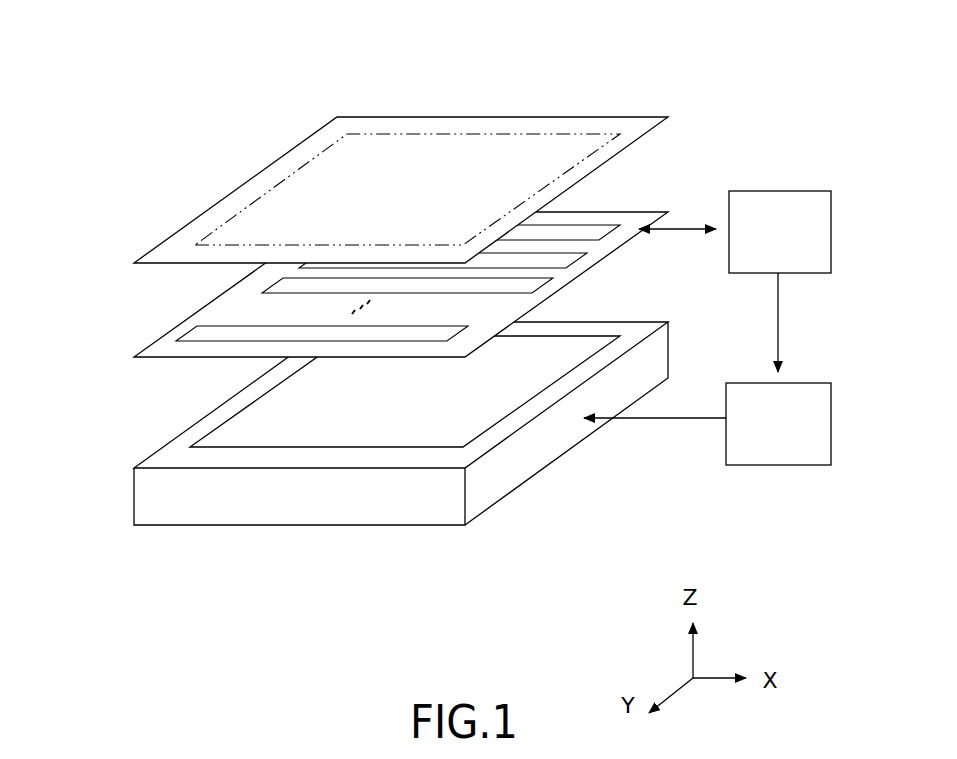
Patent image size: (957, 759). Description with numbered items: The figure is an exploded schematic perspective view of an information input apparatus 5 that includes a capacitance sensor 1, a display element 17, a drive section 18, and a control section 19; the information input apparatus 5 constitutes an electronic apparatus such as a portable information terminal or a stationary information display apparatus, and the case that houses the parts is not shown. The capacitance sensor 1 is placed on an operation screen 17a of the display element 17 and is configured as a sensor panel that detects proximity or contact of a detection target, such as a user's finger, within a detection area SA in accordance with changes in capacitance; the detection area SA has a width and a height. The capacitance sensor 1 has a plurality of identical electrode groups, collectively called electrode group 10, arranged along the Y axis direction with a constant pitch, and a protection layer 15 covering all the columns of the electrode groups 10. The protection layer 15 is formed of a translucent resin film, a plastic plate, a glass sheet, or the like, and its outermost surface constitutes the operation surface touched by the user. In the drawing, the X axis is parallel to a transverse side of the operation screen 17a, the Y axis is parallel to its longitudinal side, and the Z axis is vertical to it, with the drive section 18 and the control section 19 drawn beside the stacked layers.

The capacitance sensor 1 is at (87, 207).
The information input apparatus 5 is at (670, 72).
The electrode group 10 is at (160, 338).
The protection layer 15 is at (162, 243).
The display element 17 is at (160, 450).
The operation screen 17a is at (290, 445).
The drive section 18 is at (805, 191).
The control section 19 is at (805, 383).
The detection area SA is at (413, 134).